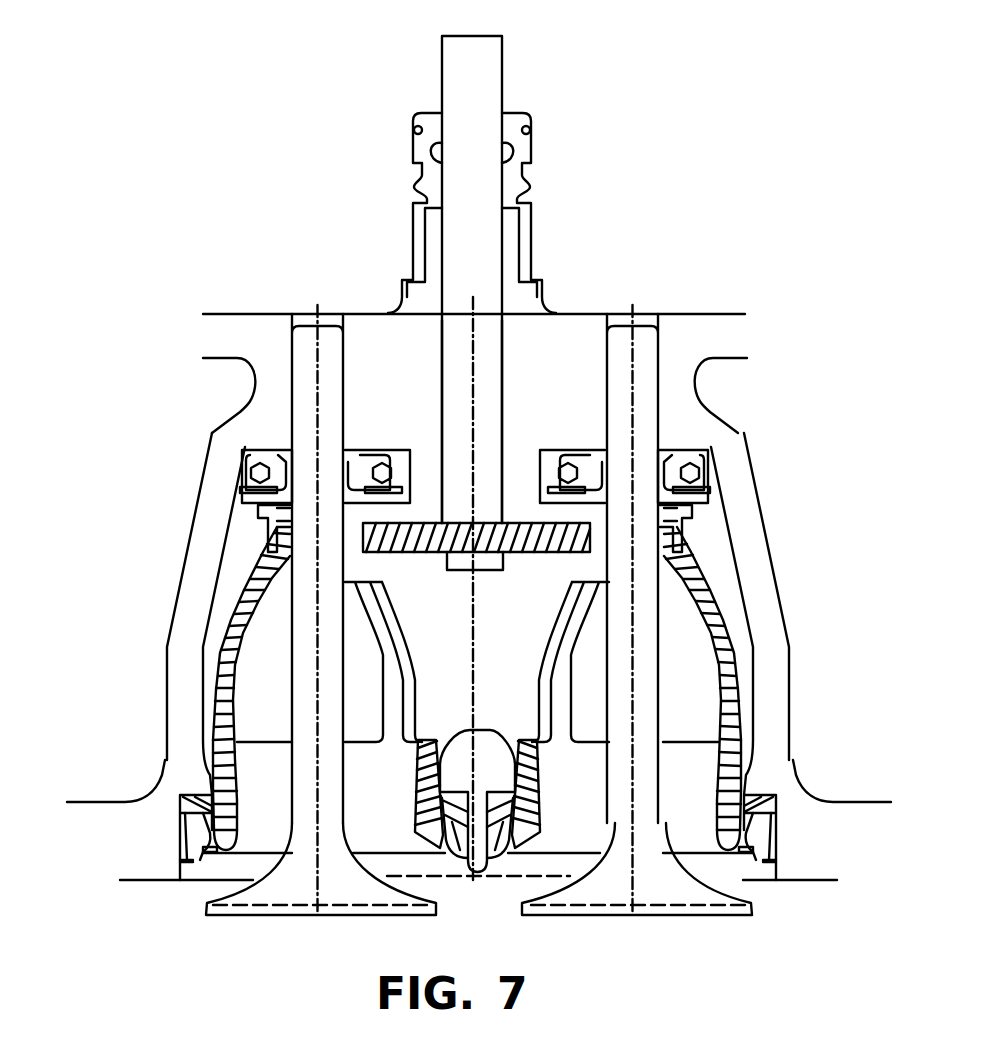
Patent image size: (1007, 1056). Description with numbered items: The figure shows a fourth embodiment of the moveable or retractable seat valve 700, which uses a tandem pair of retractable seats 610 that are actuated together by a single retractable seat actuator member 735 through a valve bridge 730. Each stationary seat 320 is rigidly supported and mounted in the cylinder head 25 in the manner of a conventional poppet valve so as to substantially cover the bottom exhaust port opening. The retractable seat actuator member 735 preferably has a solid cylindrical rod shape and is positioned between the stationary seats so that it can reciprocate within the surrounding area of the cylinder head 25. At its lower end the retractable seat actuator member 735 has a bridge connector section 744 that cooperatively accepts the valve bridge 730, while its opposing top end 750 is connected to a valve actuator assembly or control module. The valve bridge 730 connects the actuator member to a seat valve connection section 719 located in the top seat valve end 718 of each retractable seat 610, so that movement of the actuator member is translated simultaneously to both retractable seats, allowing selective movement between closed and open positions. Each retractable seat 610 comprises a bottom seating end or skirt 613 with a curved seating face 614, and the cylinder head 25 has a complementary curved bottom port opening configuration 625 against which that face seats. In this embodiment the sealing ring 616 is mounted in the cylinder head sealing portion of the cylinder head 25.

The retractable seat valve 700 is at (211, 261).
The top end 750 is at (484, 77).
The retractable seat actuator member 735 is at (492, 362).
The cylinder head 25 is at (700, 335).
The top seat valve end 718 is at (258, 517).
The seat valve connection section 719 is at (270, 535).
The stationary seat 320 is at (342, 677).
The retractable seat 610 is at (207, 672).
The bottom seating end 613 is at (402, 799).
The curved seating face 614 is at (203, 865).
The sealing ring 616 is at (183, 795).
The curved bottom port opening configuration 625 is at (183, 852).
The valve bridge 730 is at (530, 545).
The bridge connector section 744 is at (468, 548).